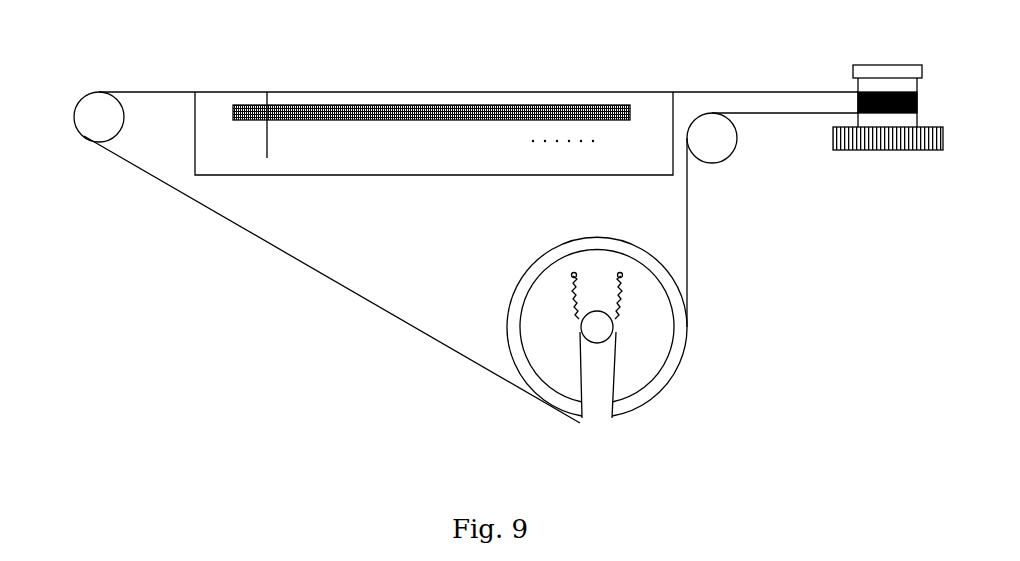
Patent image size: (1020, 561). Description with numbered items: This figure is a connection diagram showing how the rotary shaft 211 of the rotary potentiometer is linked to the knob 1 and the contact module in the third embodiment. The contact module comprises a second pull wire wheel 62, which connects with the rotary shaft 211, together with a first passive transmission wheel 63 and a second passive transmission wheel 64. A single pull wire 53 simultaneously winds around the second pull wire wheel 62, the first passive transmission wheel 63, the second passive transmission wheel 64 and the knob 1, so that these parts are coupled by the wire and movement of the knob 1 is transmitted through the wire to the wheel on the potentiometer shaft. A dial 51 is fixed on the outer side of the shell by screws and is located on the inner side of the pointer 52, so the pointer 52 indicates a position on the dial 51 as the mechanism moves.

The knob 1 is at (878, 118).
The dial 51 is at (333, 163).
The pointer 52 is at (262, 148).
The pull wire 53 is at (152, 91).
The second pull wire wheel 62 is at (652, 353).
The first passive transmission wheel 63 is at (97, 110).
The second passive transmission wheel 64 is at (725, 153).
The rotary shaft 211 is at (597, 337).